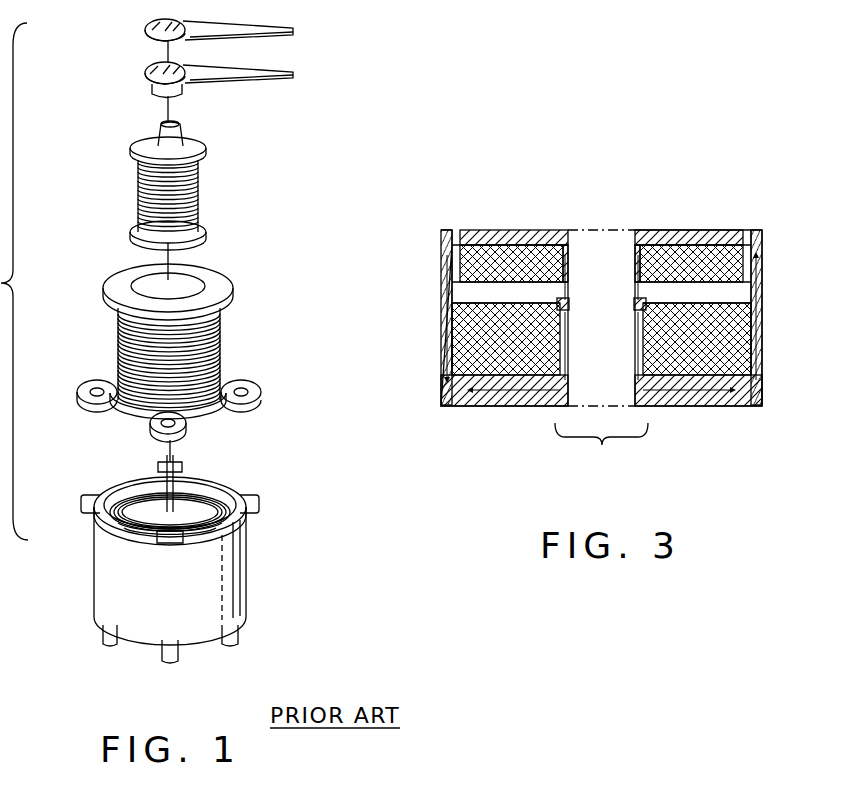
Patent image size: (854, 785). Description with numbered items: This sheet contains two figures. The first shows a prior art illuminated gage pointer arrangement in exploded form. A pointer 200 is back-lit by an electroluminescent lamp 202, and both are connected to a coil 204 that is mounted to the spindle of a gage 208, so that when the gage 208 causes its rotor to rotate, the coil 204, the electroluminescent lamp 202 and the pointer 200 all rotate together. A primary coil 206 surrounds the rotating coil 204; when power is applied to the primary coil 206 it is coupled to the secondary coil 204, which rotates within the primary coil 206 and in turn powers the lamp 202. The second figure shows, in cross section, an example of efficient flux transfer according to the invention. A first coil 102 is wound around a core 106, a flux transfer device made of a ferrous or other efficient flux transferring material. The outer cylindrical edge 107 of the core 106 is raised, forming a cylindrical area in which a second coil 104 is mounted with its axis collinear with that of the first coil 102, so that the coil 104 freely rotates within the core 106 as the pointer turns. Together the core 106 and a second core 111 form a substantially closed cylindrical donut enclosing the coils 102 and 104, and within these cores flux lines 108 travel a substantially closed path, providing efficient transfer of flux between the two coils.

In FIG. 1, the pointer 200 is at (148, 24).
In FIG. 1, the electroluminescent lamp 202 is at (288, 72).
In FIG. 1, the coil 204 is at (200, 185).
In FIG. 1, the primary coil 206 is at (225, 340).
In FIG. 1, the gage 208 is at (205, 578).
In FIG. 3, the first coil 102 is at (730, 347).
In FIG. 3, the coil 104 is at (728, 262).
In FIG. 3, the core 106 is at (762, 384).
In FIG. 3, the outer cylindrical edge 107 is at (440, 262).
In FIG. 3, the flux lines 108 is at (540, 390).
In FIG. 3, the core 111 is at (505, 230).